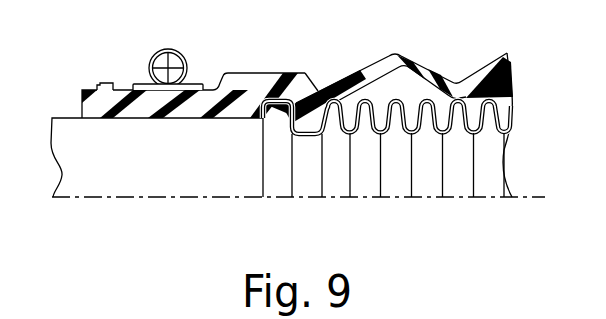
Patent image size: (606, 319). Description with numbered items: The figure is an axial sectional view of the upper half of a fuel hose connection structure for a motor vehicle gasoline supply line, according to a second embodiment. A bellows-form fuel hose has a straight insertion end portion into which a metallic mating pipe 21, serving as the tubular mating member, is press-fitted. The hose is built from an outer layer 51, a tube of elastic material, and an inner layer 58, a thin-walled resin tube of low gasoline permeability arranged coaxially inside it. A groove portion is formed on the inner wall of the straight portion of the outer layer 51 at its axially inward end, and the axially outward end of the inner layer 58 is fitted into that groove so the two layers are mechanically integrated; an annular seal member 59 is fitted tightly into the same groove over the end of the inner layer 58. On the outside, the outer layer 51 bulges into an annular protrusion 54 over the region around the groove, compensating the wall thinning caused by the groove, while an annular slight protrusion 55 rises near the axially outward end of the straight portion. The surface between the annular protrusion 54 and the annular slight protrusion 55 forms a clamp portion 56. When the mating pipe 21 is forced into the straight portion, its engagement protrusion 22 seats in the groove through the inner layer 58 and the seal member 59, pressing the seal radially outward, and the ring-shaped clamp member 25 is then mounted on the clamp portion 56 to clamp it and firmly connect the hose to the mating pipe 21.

The mating pipe 21 is at (72, 118).
The engagement protrusion 22 is at (262, 165).
The clamp member 25 is at (149, 70).
The outer layer 51 is at (366, 58).
The annular protrusion 54 is at (257, 74).
The annular slight protrusion 55 is at (108, 85).
The clamp portion 56 is at (214, 87).
The inner layer 58 is at (495, 103).
The annular seal member 59 is at (306, 88).